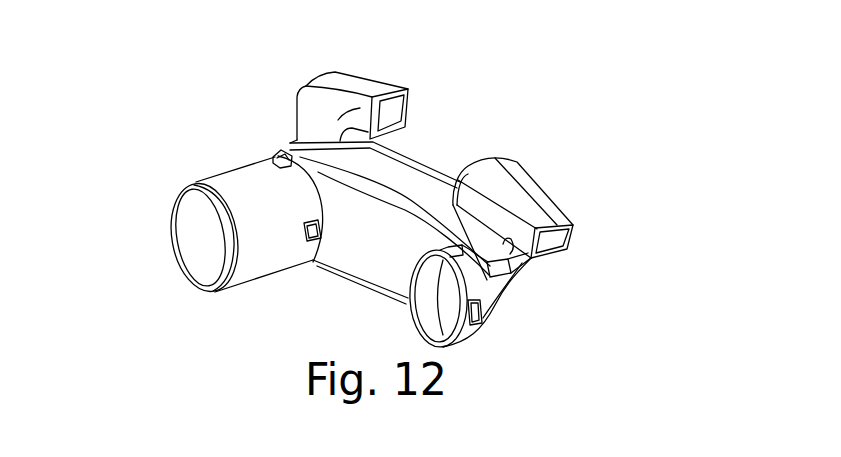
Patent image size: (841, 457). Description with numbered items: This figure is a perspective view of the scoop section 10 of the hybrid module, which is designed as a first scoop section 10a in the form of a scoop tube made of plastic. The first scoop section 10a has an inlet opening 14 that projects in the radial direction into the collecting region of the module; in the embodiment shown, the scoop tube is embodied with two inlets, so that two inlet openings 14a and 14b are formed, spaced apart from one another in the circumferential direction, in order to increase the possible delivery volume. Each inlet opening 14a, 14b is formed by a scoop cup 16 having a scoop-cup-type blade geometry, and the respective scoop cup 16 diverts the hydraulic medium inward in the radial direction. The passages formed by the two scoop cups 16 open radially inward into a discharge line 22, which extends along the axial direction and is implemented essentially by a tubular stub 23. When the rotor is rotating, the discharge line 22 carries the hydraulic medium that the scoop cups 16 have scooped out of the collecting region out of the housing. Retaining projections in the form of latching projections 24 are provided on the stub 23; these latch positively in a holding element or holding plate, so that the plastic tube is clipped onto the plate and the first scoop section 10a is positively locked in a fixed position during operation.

The scoop section 10 is at (423, 201).
The first scoop section 10a is at (460, 133).
The inlet opening 14 is at (524, 166).
The inlet opening 14a is at (562, 255).
The inlet opening 14b is at (413, 103).
The scoop cup 16 is at (479, 166).
The discharge line 22 is at (187, 232).
The tubular stub 23 is at (198, 248).
The latching projections 24 is at (275, 157).